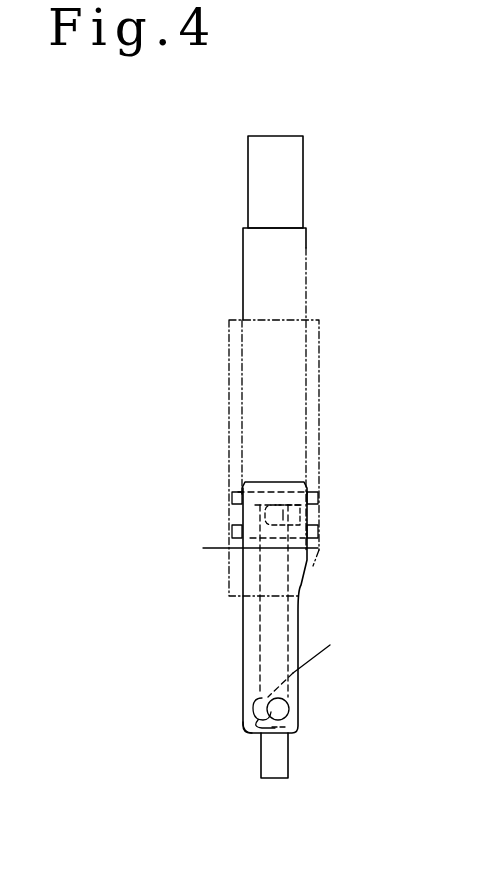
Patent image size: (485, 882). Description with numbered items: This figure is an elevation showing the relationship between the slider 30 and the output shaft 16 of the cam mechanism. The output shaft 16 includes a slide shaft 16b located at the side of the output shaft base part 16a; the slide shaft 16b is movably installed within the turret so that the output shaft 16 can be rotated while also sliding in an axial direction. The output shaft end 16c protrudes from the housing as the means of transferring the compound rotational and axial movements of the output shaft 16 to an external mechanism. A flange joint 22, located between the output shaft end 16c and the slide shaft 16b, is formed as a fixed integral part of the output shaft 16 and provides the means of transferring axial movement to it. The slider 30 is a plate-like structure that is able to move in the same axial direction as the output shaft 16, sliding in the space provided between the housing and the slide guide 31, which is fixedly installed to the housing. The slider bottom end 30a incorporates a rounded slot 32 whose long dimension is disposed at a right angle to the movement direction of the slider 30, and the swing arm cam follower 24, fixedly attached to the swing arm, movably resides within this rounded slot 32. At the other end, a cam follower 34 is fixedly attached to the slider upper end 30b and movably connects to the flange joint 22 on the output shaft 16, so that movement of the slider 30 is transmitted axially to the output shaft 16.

The output shaft 16 is at (302, 255).
The output shaft base part 16a is at (287, 758).
The slide shaft 16b is at (283, 628).
The output shaft end 16c is at (293, 168).
The flange joint 22 is at (265, 516).
The swing arm cam follower 24 is at (290, 704).
The slider 30 is at (243, 626).
The slider bottom end 30a is at (247, 740).
The slider upper end 30b is at (262, 483).
The slide guide 31 is at (320, 365).
The rounded slot 32 is at (253, 710).
The cam follower 34 is at (265, 517).